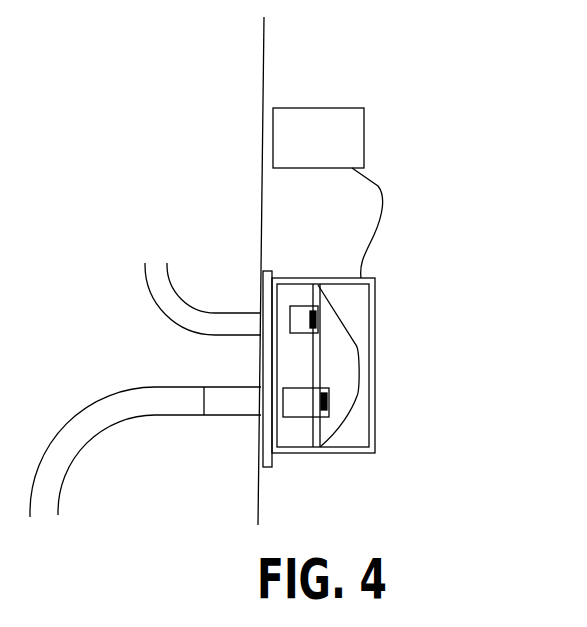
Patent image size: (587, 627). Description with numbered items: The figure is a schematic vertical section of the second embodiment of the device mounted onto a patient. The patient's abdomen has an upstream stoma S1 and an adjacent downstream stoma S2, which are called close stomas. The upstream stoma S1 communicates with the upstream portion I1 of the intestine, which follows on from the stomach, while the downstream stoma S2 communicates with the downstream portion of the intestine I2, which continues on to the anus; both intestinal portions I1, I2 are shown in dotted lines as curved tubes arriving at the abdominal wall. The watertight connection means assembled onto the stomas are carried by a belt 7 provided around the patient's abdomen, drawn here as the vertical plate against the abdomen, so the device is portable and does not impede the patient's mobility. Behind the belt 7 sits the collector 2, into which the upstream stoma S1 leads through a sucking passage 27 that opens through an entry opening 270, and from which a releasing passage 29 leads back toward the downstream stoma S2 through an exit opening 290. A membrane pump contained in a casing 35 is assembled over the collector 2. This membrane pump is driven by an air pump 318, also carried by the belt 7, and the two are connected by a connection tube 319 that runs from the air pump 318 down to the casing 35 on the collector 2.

The collector 2 is at (299, 273).
The belt 7 is at (281, 452).
The sucking passage 27 is at (322, 301).
The entry opening 270 is at (332, 316).
The releasing passage 29 is at (322, 409).
The exit opening 290 is at (340, 400).
The casing 35 is at (367, 347).
The air pump 318 is at (364, 115).
The connection tube 319 is at (386, 178).
The upstream stoma S1 is at (216, 301).
The upstream portion of the intestine I1 is at (149, 263).
The downstream stoma S2 is at (254, 428).
The downstream portion of the intestine I2 is at (67, 480).